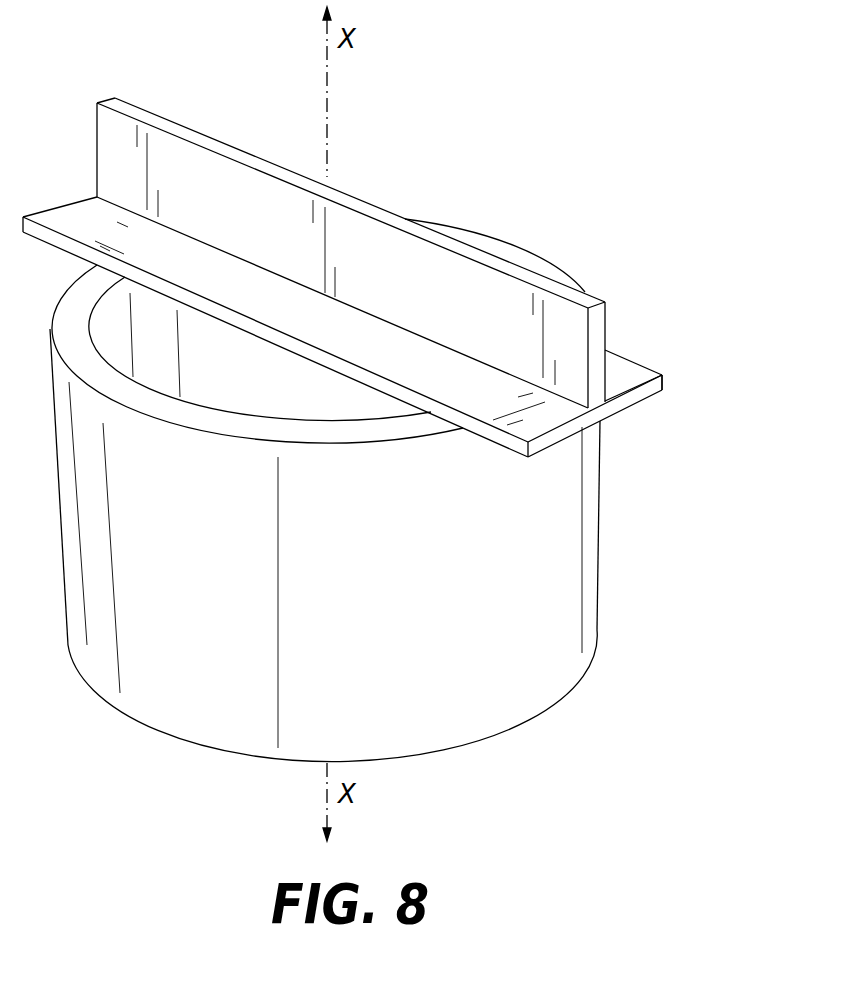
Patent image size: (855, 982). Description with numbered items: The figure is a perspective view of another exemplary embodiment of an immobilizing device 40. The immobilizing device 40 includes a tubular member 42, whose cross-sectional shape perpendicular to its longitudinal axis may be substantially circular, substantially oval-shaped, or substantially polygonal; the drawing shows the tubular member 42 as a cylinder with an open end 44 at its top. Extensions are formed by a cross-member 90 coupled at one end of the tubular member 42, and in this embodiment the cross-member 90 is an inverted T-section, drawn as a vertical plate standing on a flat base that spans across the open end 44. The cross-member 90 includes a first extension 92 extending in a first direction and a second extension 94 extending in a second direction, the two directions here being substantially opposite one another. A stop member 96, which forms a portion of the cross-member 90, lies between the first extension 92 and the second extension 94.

The immobilizing device 40 is at (635, 136).
The tubular member 42 is at (532, 553).
The opening 44 is at (102, 341).
The cross-member 90 is at (408, 178).
The first extension 92 is at (633, 368).
The second extension 94 is at (62, 217).
The stop member 96 is at (240, 291).